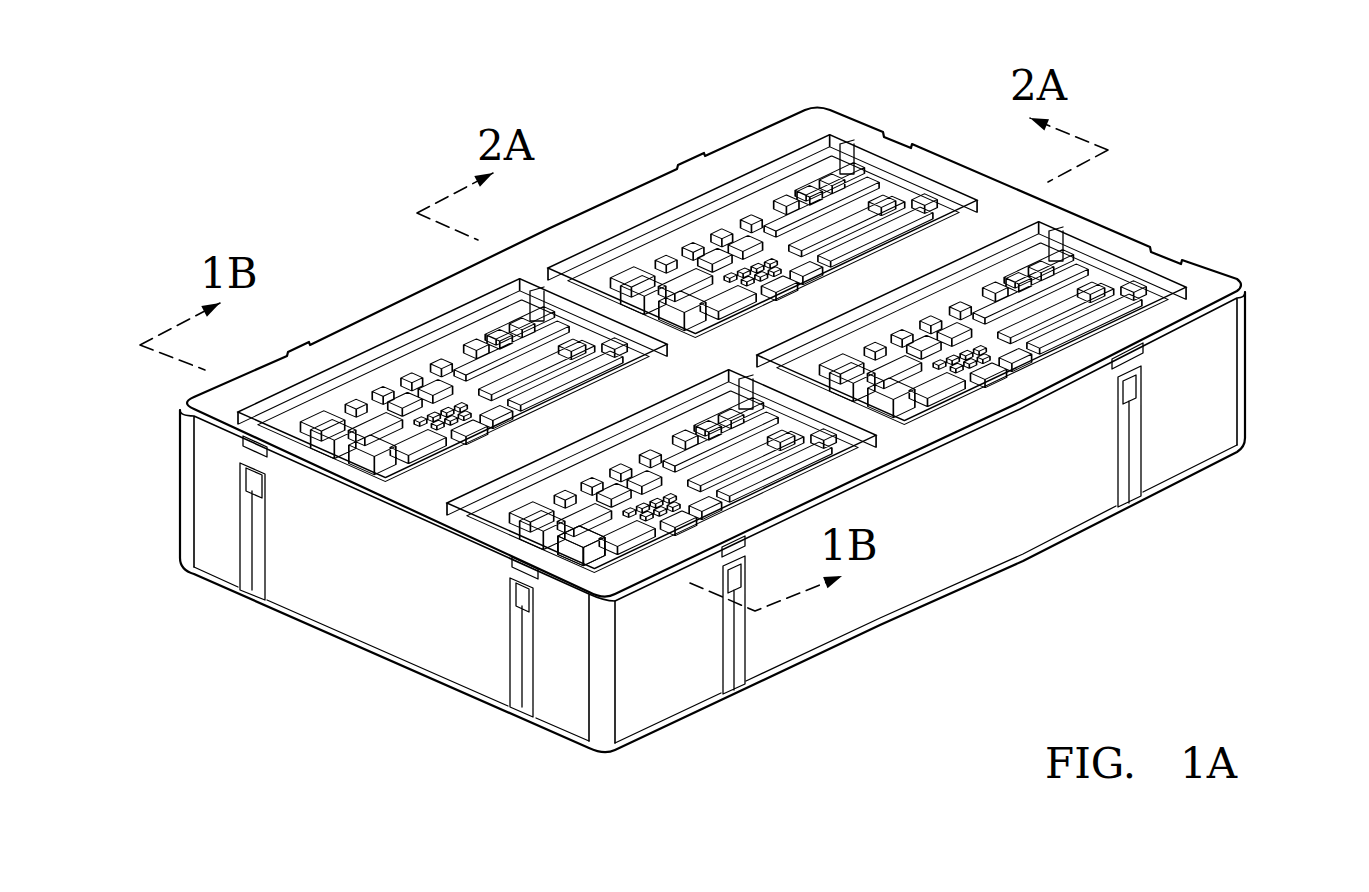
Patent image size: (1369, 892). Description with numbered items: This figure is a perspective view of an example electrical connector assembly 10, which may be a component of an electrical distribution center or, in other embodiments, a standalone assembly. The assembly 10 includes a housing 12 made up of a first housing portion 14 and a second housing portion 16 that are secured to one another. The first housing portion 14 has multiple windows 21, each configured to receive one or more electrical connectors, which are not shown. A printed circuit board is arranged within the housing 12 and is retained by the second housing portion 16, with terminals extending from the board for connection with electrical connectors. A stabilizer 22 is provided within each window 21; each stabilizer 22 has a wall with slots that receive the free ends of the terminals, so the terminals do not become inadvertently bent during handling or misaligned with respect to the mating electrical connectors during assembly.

The electrical connector assembly 10 is at (1210, 224).
The housing 12 is at (1260, 274).
The first housing portion 14 is at (1077, 227).
The second housing portion 16 is at (1167, 460).
The window 21 is at (505, 482).
The stabilizer 22 is at (612, 520).